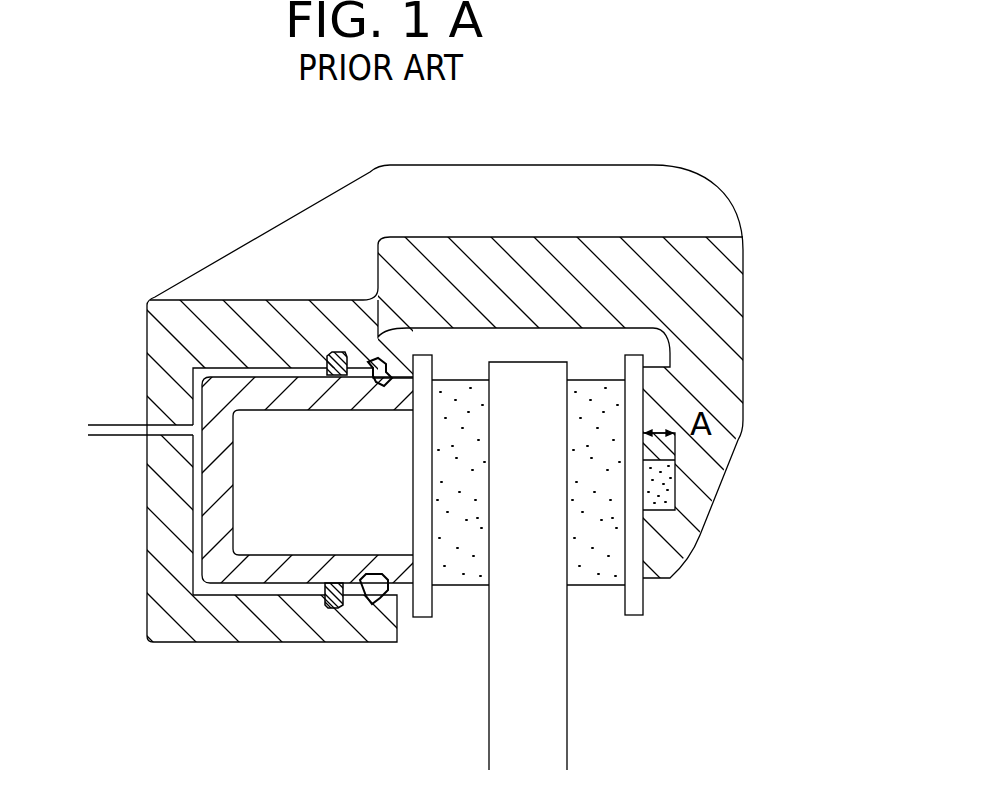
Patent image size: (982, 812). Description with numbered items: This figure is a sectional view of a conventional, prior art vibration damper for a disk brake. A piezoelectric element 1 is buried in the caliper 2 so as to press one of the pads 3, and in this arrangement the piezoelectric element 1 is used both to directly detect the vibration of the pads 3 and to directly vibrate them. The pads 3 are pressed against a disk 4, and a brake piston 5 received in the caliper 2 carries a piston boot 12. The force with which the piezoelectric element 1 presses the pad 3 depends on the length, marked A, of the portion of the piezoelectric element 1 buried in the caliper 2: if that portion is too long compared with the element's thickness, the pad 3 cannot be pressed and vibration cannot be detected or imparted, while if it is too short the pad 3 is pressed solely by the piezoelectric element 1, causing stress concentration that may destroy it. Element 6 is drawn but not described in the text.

The piezoelectric element 1 is at (660, 492).
The caliper 2 is at (713, 272).
The pad 3 is at (595, 568).
The disk 4 is at (512, 685).
The brake piston 5 is at (220, 527).
The lower seal 6 is at (333, 603).
The piston boot 12 is at (373, 360).